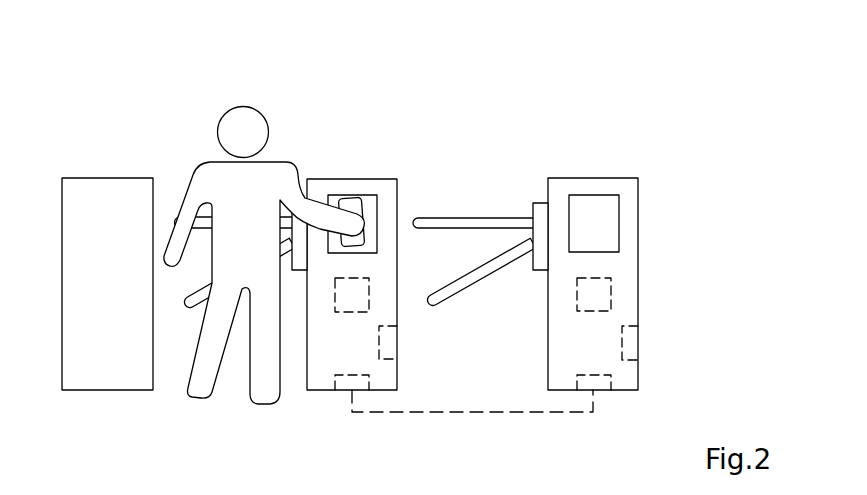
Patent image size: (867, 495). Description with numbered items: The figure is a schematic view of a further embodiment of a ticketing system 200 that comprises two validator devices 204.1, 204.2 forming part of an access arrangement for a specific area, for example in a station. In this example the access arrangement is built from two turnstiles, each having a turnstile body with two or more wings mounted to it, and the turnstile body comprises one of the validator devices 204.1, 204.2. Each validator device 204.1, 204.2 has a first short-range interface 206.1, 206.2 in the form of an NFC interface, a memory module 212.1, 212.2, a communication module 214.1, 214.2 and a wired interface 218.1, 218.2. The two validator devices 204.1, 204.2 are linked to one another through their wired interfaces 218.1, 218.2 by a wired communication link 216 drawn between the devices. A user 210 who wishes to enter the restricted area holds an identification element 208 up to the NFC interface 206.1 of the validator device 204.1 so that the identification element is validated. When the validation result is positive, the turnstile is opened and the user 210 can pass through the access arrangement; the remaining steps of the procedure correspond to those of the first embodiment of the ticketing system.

The ticketing system 200 is at (520, 94).
The validator device 204.1 is at (387, 202).
The validator device 204.2 is at (630, 202).
The first short-range interface 206.1 is at (368, 198).
The first short-range interface 206.2 is at (606, 203).
The access medium (card) 208 is at (347, 205).
The user 210 is at (262, 250).
The memory module 212.1 is at (358, 298).
The memory module 212.2 is at (602, 293).
The communication module 214.1 is at (390, 349).
The communication module 214.2 is at (632, 350).
The communication connection 216 is at (510, 413).
The wired interface 218.1 is at (345, 383).
The wired interface 218.2 is at (602, 383).